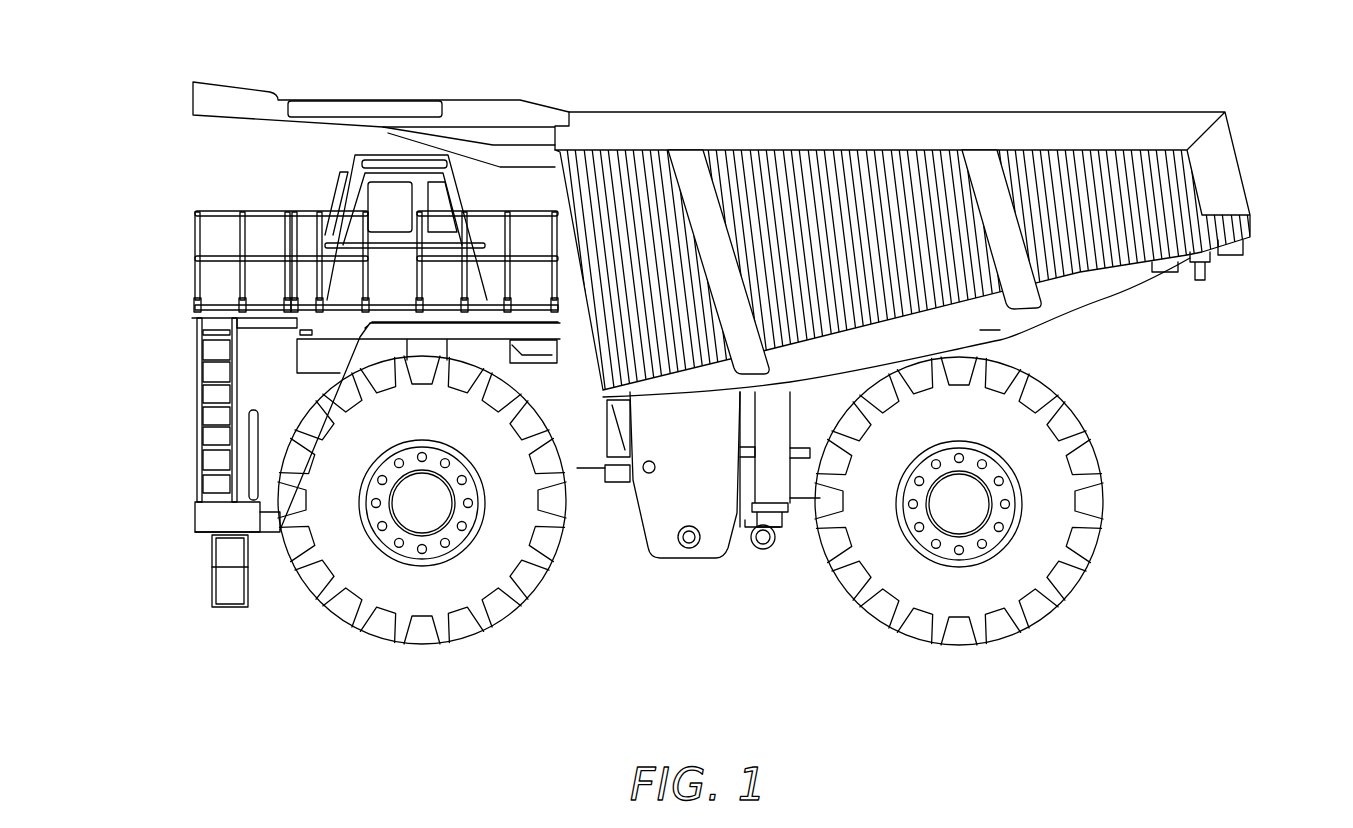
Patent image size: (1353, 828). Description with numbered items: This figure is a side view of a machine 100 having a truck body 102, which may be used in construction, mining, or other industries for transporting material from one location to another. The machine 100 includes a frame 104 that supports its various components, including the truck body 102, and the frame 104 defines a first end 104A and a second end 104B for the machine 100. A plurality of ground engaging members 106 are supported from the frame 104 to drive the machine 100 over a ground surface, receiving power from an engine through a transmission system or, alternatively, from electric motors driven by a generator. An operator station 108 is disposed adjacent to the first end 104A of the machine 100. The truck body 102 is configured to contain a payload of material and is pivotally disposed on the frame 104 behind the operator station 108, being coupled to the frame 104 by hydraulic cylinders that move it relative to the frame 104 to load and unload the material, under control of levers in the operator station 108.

The machine 100 is at (702, 358).
The truck body 102 is at (962, 112).
The frame 104 is at (638, 503).
The first end 104A is at (170, 155).
The second end 104B is at (1058, 359).
The ground engaging members 106 is at (441, 645).
The operator station 108 is at (358, 156).